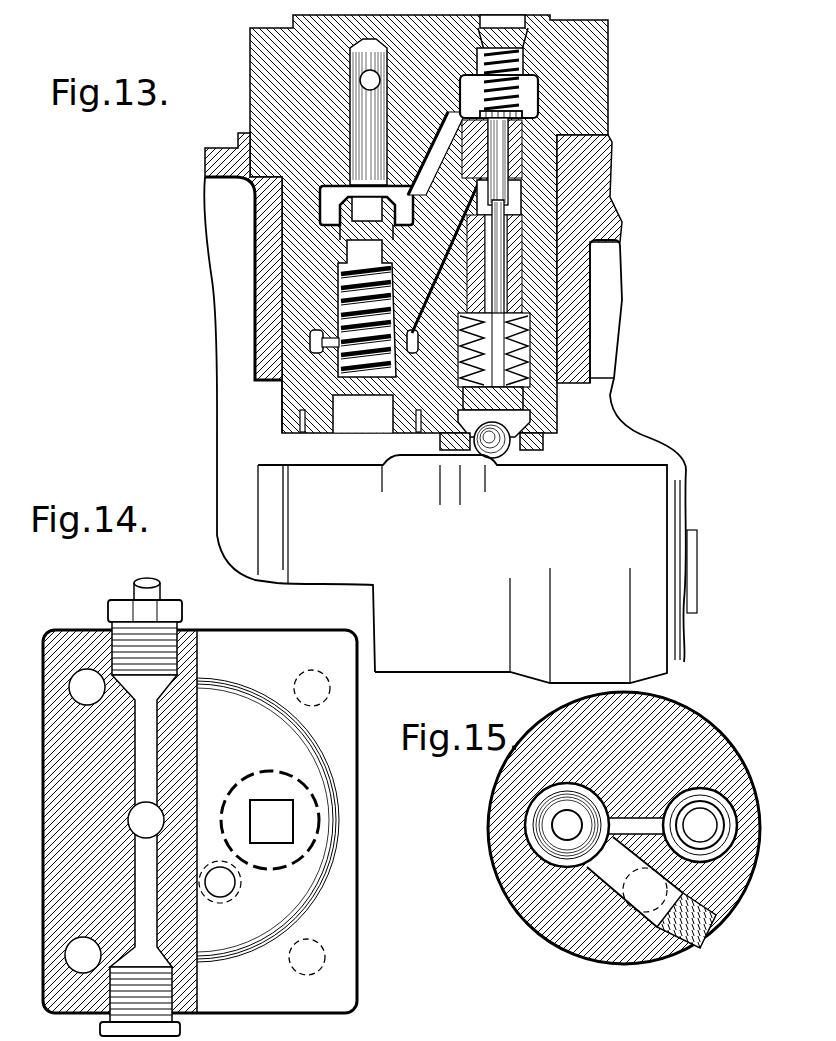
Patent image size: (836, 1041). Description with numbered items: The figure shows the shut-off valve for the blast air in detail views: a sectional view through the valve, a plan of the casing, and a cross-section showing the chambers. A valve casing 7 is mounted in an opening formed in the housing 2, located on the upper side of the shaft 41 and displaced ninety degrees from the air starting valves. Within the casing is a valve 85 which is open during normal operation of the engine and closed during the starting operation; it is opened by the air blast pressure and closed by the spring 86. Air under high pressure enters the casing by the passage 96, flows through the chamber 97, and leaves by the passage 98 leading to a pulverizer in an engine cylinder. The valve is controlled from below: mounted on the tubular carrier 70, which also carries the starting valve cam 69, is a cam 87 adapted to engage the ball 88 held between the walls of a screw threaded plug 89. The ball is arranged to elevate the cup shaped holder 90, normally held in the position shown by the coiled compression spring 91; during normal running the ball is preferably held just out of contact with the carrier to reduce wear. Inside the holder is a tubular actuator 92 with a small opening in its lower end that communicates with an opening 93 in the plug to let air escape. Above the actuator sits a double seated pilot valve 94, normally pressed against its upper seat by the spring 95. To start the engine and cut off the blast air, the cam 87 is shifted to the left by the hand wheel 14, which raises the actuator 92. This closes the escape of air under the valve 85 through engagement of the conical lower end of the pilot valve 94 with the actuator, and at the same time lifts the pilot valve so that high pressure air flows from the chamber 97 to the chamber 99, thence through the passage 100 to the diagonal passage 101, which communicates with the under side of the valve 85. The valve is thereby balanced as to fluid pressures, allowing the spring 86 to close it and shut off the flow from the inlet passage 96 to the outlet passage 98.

In FIG. 13, the housing 2 is at (606, 182).
In FIG. 13, the valve casing 7 is at (607, 87).
In FIG. 14, the valve casing 7 is at (350, 914).
In FIG. 15, the valve casing 7 is at (742, 756).
In FIG. 13, the hand wheel 14 is at (470, 227).
In FIG. 13, the shaft 41 is at (258, 522).
In FIG. 13, the cam 69 is at (395, 462).
In FIG. 13, the tubular carrier 70 is at (456, 665).
In FIG. 13, the valve 85 is at (340, 236).
In FIG. 15, the valve 85 is at (545, 812).
In FIG. 13, the spring 86 is at (355, 378).
In FIG. 13, the cam 87 is at (538, 673).
In FIG. 13, the ball 88 is at (497, 459).
In FIG. 13, the screw threaded plug 89 is at (545, 446).
In FIG. 13, the cup shaped holder 90 is at (524, 403).
In FIG. 13, the coiled compression spring 91 is at (530, 332).
In FIG. 13, the tubular actuator 92 is at (504, 300).
In FIG. 13, the opening 93 is at (521, 451).
In FIG. 13, the double seated pilot valve 94 is at (522, 116).
In FIG. 15, the double seated pilot valve 94 is at (700, 825).
In FIG. 13, the spring 95 is at (497, 48).
In FIG. 13, the passage 96 is at (447, 20).
In FIG. 14, the passage 96 is at (220, 882).
In FIG. 13, the chamber 97 is at (322, 210).
In FIG. 15, the chamber 97 is at (525, 826).
In FIG. 13, the passage 98 is at (373, 78).
In FIG. 14, the passage 98 is at (146, 915).
In FIG. 13, the chamber 99 is at (527, 101).
In FIG. 15, the chamber 99 is at (730, 840).
In FIG. 13, the passage 100 is at (515, 167).
In FIG. 13, the diagonal passage 101 is at (419, 432).